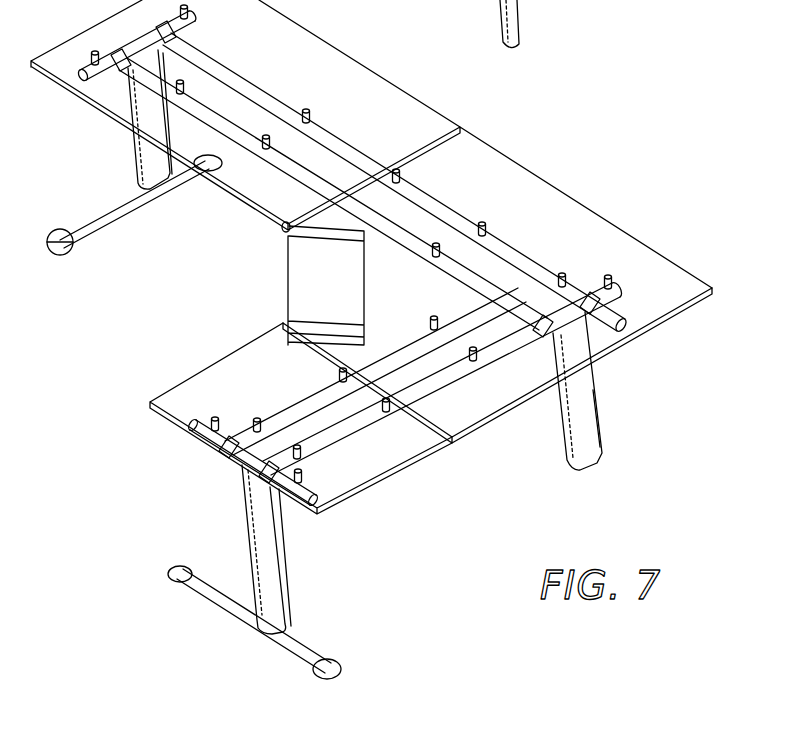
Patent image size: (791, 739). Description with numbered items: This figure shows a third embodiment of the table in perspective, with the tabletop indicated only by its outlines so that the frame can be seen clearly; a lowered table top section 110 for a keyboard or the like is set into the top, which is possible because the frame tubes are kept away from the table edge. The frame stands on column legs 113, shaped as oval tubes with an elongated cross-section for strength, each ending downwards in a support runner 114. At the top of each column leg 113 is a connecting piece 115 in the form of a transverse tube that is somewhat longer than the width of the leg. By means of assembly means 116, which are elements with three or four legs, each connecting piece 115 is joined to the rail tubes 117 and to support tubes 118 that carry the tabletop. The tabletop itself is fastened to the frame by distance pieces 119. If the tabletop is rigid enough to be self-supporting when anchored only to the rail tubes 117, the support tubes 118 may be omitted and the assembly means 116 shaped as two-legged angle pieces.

The lowered table top section 110 is at (308, 270).
The column leg 113 is at (270, 569).
The support runner 114 is at (309, 654).
The connecting piece 115 is at (255, 460).
The assembly means 116 is at (230, 447).
The rail tube 117 is at (373, 417).
The support tube 118 is at (320, 488).
The distance piece 119 is at (488, 228).